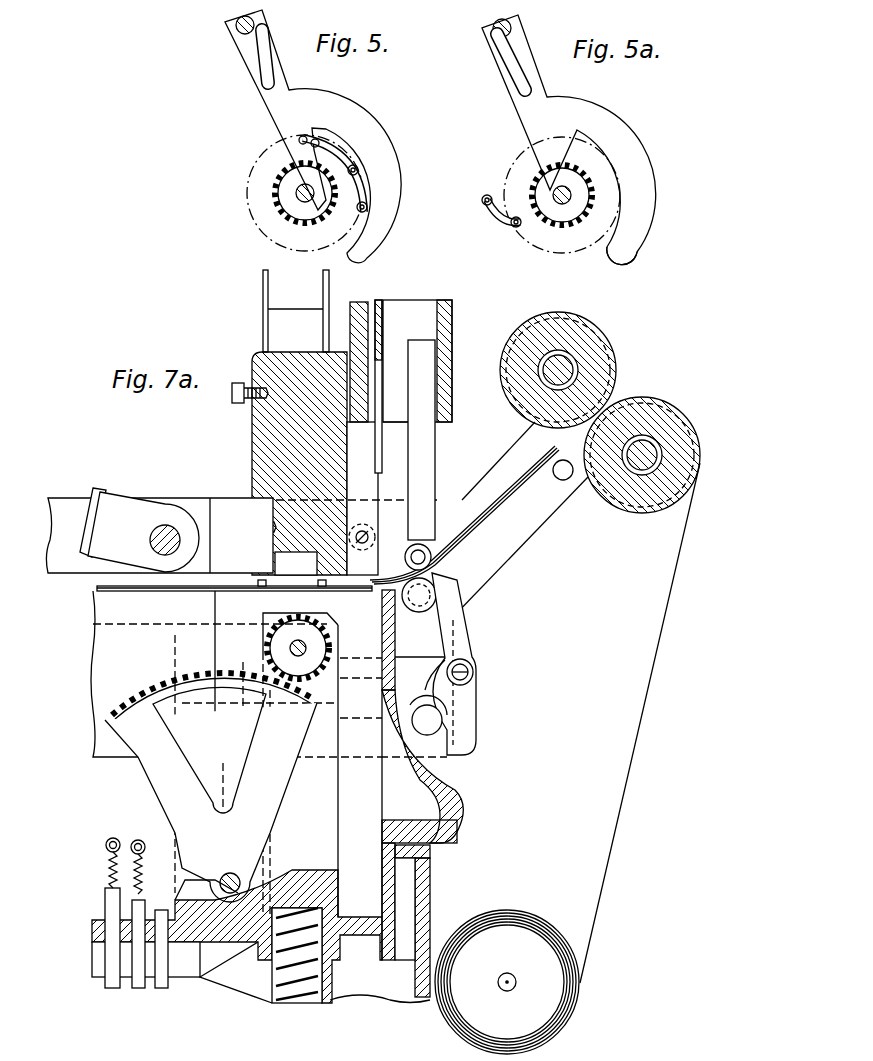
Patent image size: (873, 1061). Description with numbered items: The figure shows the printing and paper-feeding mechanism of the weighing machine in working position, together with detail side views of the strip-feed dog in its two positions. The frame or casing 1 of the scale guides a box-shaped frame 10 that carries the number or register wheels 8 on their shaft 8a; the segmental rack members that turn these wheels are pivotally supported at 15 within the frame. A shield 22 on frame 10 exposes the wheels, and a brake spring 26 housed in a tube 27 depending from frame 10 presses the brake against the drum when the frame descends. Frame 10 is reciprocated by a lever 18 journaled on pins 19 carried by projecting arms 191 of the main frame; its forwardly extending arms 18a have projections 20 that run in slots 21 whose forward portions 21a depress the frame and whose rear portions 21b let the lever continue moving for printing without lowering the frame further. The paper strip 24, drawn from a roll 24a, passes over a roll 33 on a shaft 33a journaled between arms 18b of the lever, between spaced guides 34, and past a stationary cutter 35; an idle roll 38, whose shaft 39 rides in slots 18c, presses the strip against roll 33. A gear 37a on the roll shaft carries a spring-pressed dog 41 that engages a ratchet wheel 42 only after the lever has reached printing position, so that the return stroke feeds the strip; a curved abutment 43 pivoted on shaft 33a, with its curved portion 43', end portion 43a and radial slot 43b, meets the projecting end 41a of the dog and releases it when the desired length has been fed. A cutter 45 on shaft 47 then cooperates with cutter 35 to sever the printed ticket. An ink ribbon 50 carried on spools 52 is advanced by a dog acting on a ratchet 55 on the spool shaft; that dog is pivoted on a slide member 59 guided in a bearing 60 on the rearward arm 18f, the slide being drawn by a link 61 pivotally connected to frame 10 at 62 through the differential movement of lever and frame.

In FIG. 7A, the frame or casing 1 is at (437, 914).
In FIG. 7A, the number wheels 8 is at (284, 589).
In FIG. 7A, the shaft of the number wheels 8a is at (288, 648).
In FIG. 7A, the box-shaped frame 10 is at (397, 880).
In FIG. 7A, the pivot of the rack members 15 is at (230, 873).
In FIG. 7A, the lever 18 is at (78, 500).
In FIG. 7A, the forwardly extending arms 18a is at (436, 600).
In FIG. 7A, the arms of the lever 18b is at (548, 514).
In FIG. 7A, the slots 18c is at (540, 362).
In FIG. 7A, the rearward arm 18f is at (254, 463).
In FIG. 7A, the pins 19 is at (437, 600).
In FIG. 7A, the projections 20 is at (440, 735).
In FIG. 7A, the slots 21 is at (392, 727).
In FIG. 7A, the forward portions of the slots 21a is at (307, 712).
In FIG. 7A, the rear portions of the slots 21b is at (442, 718).
In FIG. 7A, the shield 22 is at (128, 592).
In FIG. 7A, the paper strip 24 is at (555, 447).
In FIG. 7A, the roll 24a is at (537, 920).
In FIG. 7A, the spring 26 is at (305, 1000).
In FIG. 7A, the tube 27 is at (332, 983).
In FIG. 7A, the roll 33 is at (624, 503).
In FIG. 5, the shaft 33a is at (305, 193).
In FIG. 7A, the shaft 33a is at (653, 457).
In FIG. 7A, the guides 34 is at (490, 520).
In FIG. 7A, the stationary cutter 35 is at (230, 588).
In FIG. 5A, the gear 37a is at (520, 165).
In FIG. 7A, the idle roll 38 is at (557, 365).
In FIG. 7A, the shaft of the idle roll 39 is at (566, 372).
In FIG. 5, the spring pressed dog 41 is at (365, 192).
In FIG. 5A, the spring pressed dog 41 is at (497, 214).
In FIG. 5, the projecting end portion of the dog 41a is at (366, 211).
In FIG. 5, the ratchet wheel 42 is at (268, 170).
In FIG. 5A, the abutment 43 is at (632, 266).
In FIG. 5A, the curved portion 43' is at (589, 140).
In FIG. 5, the projecting end portion 43a is at (289, 82).
In FIG. 5, the slot 43b is at (262, 72).
In FIG. 7A, the cutter 45 is at (88, 556).
In FIG. 7A, the shaft 47 is at (167, 525).
In FIG. 7A, the ink-ribbon 50 is at (262, 591).
In FIG. 7A, the spools 52 is at (263, 293).
In FIG. 7A, the ratchet 55 is at (378, 473).
In FIG. 7A, the slide member 59 is at (421, 342).
In FIG. 7A, the bearing 60 is at (441, 378).
In FIG. 7A, the link 61 is at (409, 553).
In FIG. 7A, the pivot connection 62 is at (470, 665).
In FIG. 7A, the projecting arms 191 is at (455, 686).